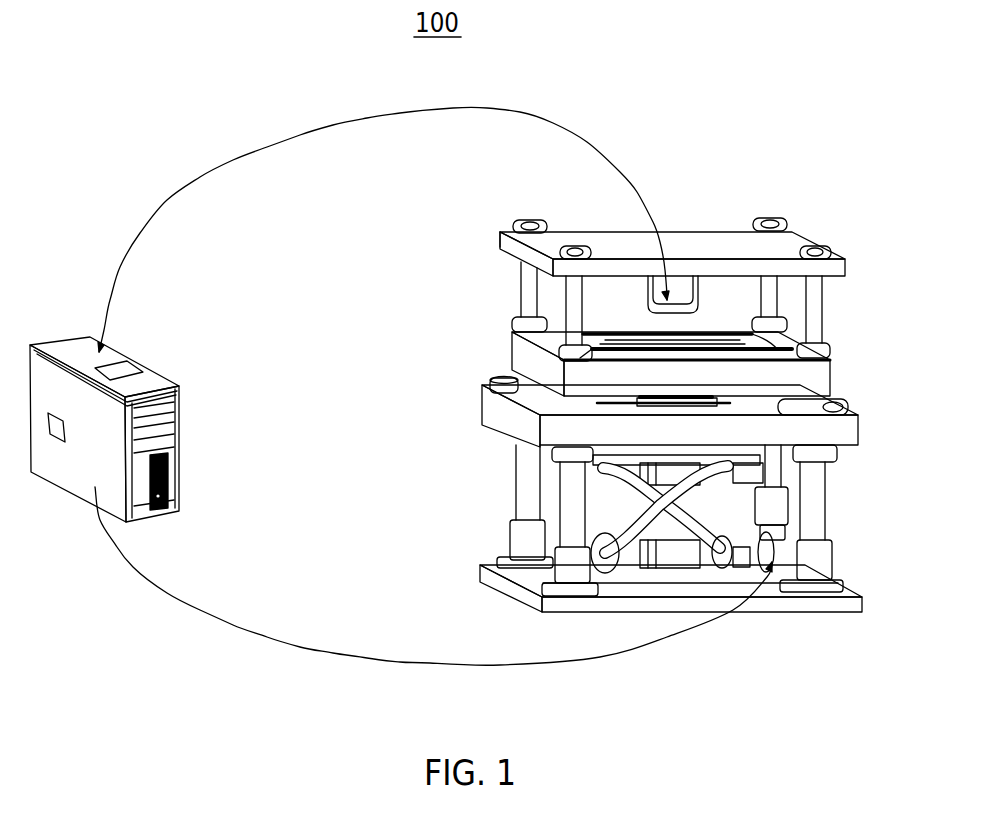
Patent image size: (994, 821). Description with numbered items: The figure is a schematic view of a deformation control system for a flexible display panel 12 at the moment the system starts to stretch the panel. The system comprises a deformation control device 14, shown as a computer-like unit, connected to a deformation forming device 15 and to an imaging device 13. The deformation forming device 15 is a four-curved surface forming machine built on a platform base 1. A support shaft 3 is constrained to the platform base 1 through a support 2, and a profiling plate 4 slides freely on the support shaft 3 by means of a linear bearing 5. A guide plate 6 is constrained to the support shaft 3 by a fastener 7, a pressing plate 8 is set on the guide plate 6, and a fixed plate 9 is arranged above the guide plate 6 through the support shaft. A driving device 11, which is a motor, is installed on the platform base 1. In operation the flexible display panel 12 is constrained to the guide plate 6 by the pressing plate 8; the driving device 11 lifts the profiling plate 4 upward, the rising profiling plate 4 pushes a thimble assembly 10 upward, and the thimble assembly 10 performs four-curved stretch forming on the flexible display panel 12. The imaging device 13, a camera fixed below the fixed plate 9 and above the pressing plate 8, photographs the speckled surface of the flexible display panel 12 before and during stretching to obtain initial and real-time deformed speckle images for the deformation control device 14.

The platform base 1 is at (840, 600).
The support 2 is at (820, 555).
The support shaft 3 is at (815, 510).
The profiling plate 4 is at (847, 433).
The linear bearing 5 is at (837, 407).
The guide plate 6 is at (823, 373).
The fastener 7 is at (823, 347).
The pressing plate 8 is at (757, 337).
The fixed plate 9 is at (780, 240).
The thimble assembly 10 is at (642, 397).
The driving device 11 is at (608, 538).
The flexible display panel 12 is at (636, 345).
The imaging device 13 is at (675, 297).
The deformation control device 14 is at (57, 343).
The deformation forming device 15 is at (764, 183).